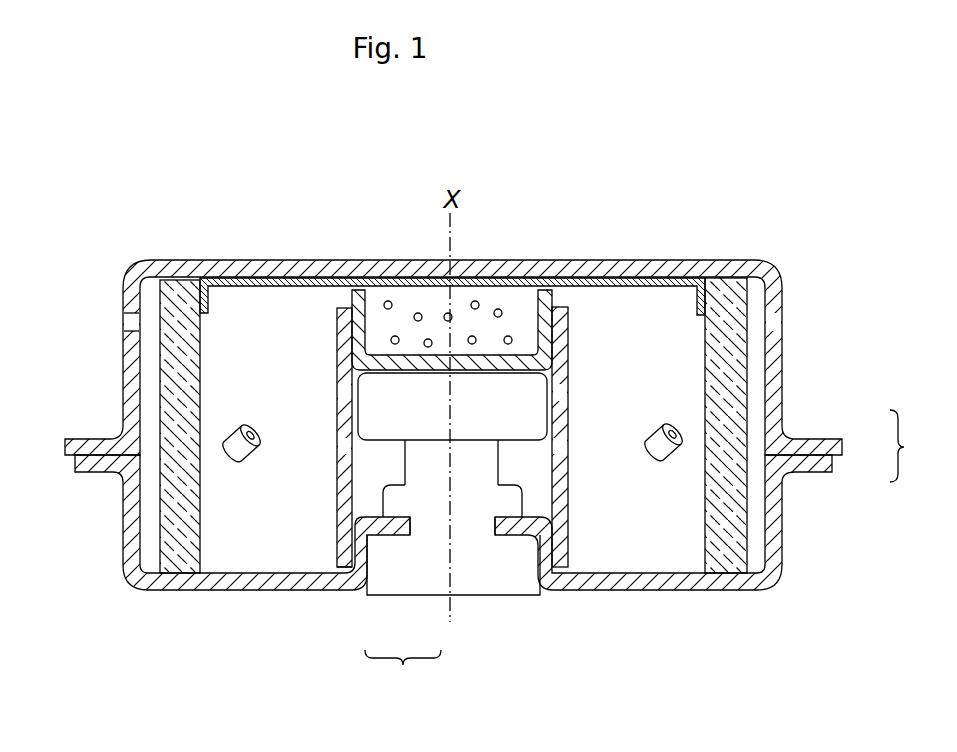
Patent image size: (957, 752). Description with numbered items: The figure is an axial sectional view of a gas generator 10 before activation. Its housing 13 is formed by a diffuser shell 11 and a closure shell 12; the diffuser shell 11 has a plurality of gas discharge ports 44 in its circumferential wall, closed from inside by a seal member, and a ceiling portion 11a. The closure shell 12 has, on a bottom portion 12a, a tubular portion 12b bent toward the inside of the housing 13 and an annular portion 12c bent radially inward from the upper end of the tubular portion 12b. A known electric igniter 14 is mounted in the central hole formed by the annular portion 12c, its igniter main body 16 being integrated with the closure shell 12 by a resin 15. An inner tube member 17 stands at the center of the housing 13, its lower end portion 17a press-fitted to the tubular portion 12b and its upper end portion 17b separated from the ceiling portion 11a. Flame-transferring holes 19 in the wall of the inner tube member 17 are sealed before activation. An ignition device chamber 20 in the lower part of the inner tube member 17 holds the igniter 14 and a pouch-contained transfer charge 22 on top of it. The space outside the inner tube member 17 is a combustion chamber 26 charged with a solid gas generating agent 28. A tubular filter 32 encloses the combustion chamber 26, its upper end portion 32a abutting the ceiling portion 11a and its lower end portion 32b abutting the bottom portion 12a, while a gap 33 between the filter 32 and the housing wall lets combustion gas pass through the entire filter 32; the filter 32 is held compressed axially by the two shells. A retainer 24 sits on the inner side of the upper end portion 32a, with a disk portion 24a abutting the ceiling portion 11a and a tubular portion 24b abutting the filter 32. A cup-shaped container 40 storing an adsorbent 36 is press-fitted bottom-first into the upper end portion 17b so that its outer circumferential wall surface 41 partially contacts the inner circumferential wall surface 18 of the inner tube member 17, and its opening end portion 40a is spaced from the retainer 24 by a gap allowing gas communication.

The gas generator 10 is at (499, 402).
The diffuser shell 11 is at (476, 316).
The ceiling portion 11a is at (527, 262).
The closure shell 12 is at (481, 548).
The bottom portion 12a is at (822, 584).
The tubular portion 12b is at (537, 560).
The annular portion 12c is at (505, 521).
The housing 13 is at (912, 446).
The electric igniter 14 is at (452, 586).
The resin 15 is at (380, 583).
The igniter main body 16 is at (423, 478).
The inner tube member 17 is at (577, 431).
The lower end portion 17a is at (556, 573).
The upper end portion 17b is at (563, 307).
The inner circumferential wall surface 18 is at (340, 511).
The flame-transferring holes 19 is at (338, 448).
The ignition device chamber 20 is at (472, 462).
The transfer charge 22 is at (452, 406).
The retainer 24 is at (452, 275).
The disk portion 24a is at (302, 282).
The tubular portion 24b is at (697, 298).
The combustion chamber 26 is at (635, 517).
The solid gas generating agent 28 is at (247, 461).
The filter 32 is at (152, 418).
The upper end portion 32a is at (173, 276).
The lower end portion 32b is at (178, 578).
The gap 33 is at (754, 568).
The adsorbent 36 is at (390, 303).
The cup-shaped container 40 is at (416, 284).
The opening end portion 40a is at (358, 290).
The outer circumferential wall surface 41 is at (351, 299).
The gas discharge ports 44 is at (130, 322).